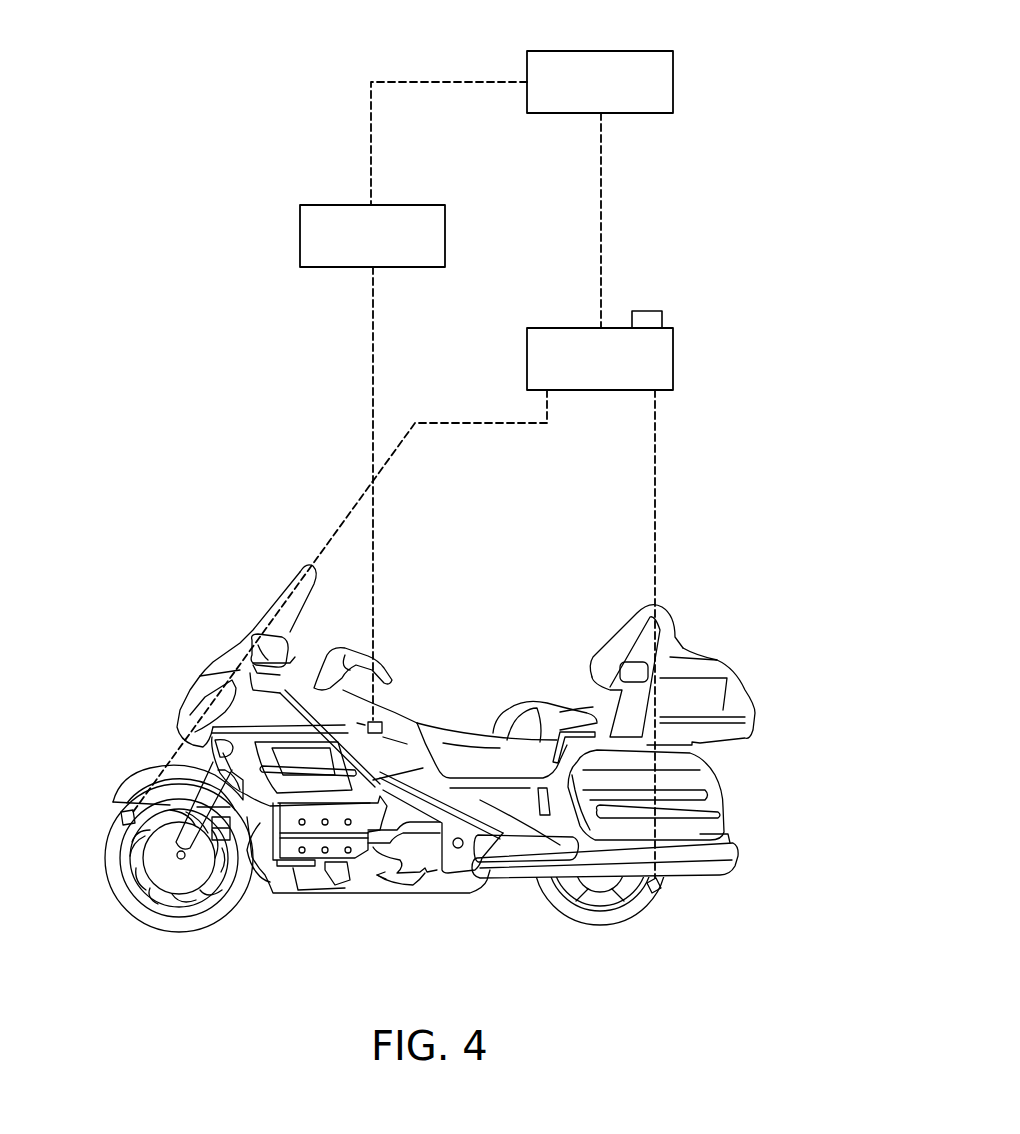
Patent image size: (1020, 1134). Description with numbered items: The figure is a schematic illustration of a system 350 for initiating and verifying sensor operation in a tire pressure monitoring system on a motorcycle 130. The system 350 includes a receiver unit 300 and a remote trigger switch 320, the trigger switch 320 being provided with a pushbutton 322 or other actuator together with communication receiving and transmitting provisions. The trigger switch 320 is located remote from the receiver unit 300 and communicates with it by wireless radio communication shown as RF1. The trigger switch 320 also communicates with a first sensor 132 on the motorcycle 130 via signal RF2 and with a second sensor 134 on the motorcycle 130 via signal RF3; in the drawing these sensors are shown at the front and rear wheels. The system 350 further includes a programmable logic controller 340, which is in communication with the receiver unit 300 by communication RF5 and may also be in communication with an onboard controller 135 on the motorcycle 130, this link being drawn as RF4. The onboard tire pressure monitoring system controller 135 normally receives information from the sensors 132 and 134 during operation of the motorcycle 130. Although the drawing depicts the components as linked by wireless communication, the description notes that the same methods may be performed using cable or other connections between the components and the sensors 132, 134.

The motorcycle 130 is at (403, 759).
The first sensor 132 is at (93, 790).
The second sensor 134 is at (678, 916).
The onboard controller 135 is at (401, 689).
The receiver unit 300 is at (696, 84).
The remote trigger switch 320 is at (696, 372).
The pushbutton 322 is at (651, 318).
The programmable logic controller 340 is at (468, 242).
The system 350 is at (170, 37).
The wireless radio communication RF1 is at (650, 221).
The signal RF2 is at (331, 519).
The signal RF3 is at (704, 478).
The fourth RF link RF4 is at (420, 340).
The communication RF5 is at (420, 127).